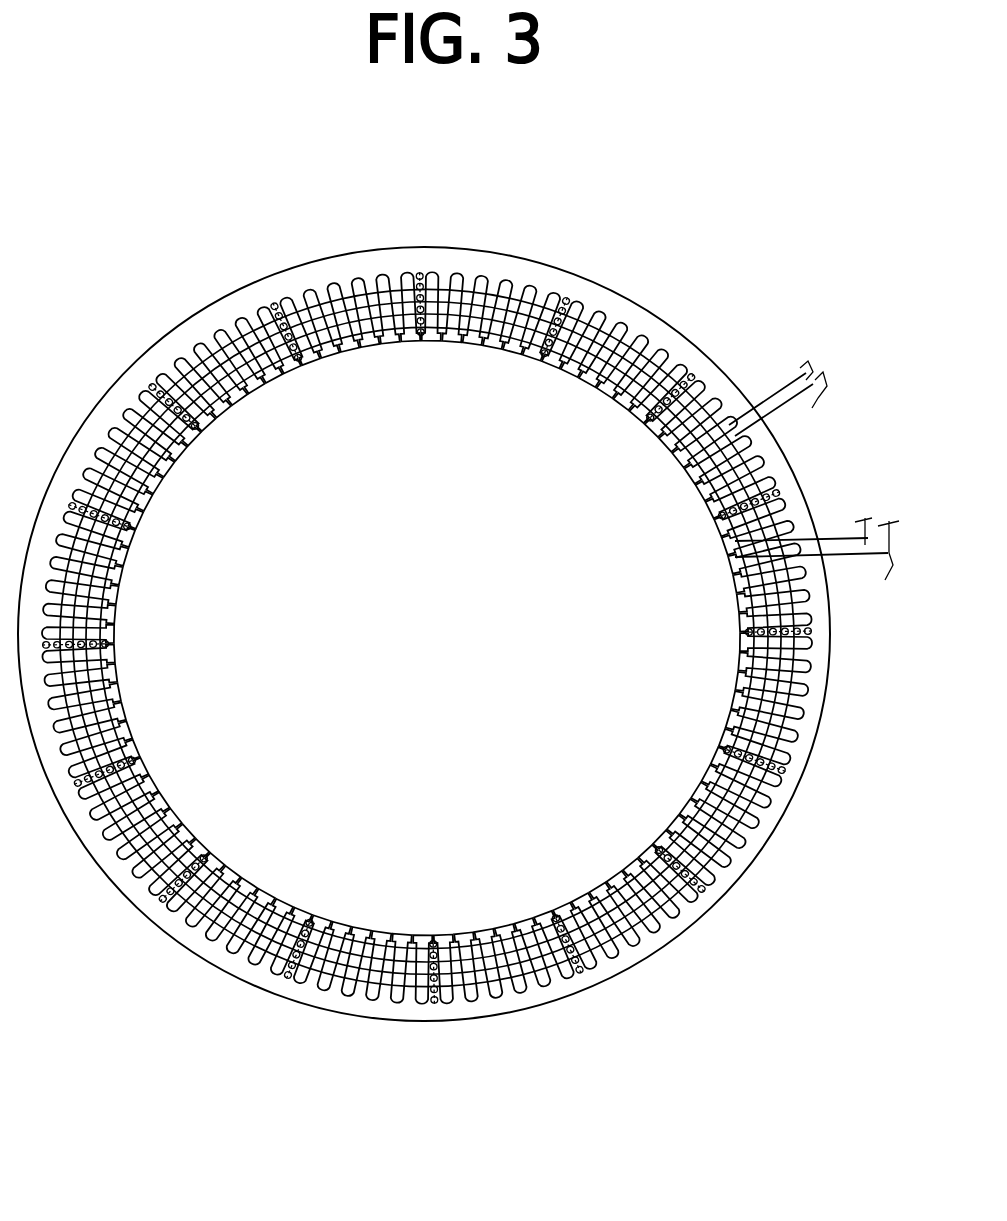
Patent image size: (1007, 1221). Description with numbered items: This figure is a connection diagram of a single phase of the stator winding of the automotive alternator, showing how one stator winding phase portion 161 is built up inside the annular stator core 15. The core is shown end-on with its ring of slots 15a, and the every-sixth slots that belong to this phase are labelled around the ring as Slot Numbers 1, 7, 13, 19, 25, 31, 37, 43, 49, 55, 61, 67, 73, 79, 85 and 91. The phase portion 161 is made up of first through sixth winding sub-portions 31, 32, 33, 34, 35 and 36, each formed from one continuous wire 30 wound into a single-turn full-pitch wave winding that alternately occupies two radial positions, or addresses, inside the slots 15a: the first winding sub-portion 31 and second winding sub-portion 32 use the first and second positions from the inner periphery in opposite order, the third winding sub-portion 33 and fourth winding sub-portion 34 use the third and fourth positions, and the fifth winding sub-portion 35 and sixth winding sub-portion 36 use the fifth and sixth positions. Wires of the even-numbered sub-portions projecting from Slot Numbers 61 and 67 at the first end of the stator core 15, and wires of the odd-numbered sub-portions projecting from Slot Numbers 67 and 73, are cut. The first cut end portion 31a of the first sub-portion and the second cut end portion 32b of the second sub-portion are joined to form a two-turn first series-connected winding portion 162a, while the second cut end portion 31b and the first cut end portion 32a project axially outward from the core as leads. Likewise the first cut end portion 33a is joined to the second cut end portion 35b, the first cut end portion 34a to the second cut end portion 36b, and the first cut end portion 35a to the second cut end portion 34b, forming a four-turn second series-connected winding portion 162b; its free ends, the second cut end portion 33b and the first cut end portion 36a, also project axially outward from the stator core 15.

The stator core 15 is at (123, 382).
The slots 15a is at (193, 355).
The continuous wire 30 is at (135, 566).
The Slot Number 1 is at (439, 953).
The Slot Number 7 is at (305, 933).
The Slot Number 13 is at (198, 865).
The Slot Number 19 is at (124, 763).
The Slot Number 25 is at (97, 650).
The first winding sub-portion 31 is at (290, 913).
The Slot Number 37 is at (192, 422).
The Slot Number 43 is at (299, 351).
The Slot Number 49 is at (427, 322).
The Slot Number 55 is at (544, 348).
The Slot Number 61 is at (655, 416).
The Slot Number 67 is at (728, 517).
The Slot Number 73 is at (755, 640).
The Slot Number 79 is at (735, 752).
The Slot Number 85 is at (660, 854).
The Slot Number 91 is at (555, 926).
The second winding sub-portion 32 is at (258, 885).
The third winding sub-portion 33 is at (195, 857).
The fourth winding sub-portion 34 is at (168, 827).
The fifth winding sub-portion 35 is at (166, 801).
The sixth winding sub-portion 36 is at (160, 783).
The first cut end portion of the first winding sub-portion 31a is at (638, 614).
The second cut end portion of the first winding sub-portion 31b is at (825, 593).
The first cut end portion of the second winding sub-portion 32a is at (803, 368).
The second cut end portion of the second winding sub-portion 32b is at (733, 588).
The first cut end portion of the third winding sub-portion 33a is at (632, 572).
The second cut end portion of the third winding sub-portion 33b is at (855, 572).
The first cut end portion of the fourth winding sub-portion 34a is at (589, 472).
The second cut end portion of the fourth winding sub-portion 34b is at (690, 478).
The first cut end portion of the fifth winding sub-portion 35a is at (598, 508).
The second cut end portion of the fifth winding sub-portion 35b is at (732, 548).
The first cut end portion of the sixth winding sub-portion 36a is at (778, 362).
The second cut end portion of the sixth winding sub-portion 36b is at (672, 452).
The stator winding phase portion 161 is at (457, 793).
The first series-connected winding portion 162a is at (360, 862).
The second series-connected winding portion 162b is at (273, 695).